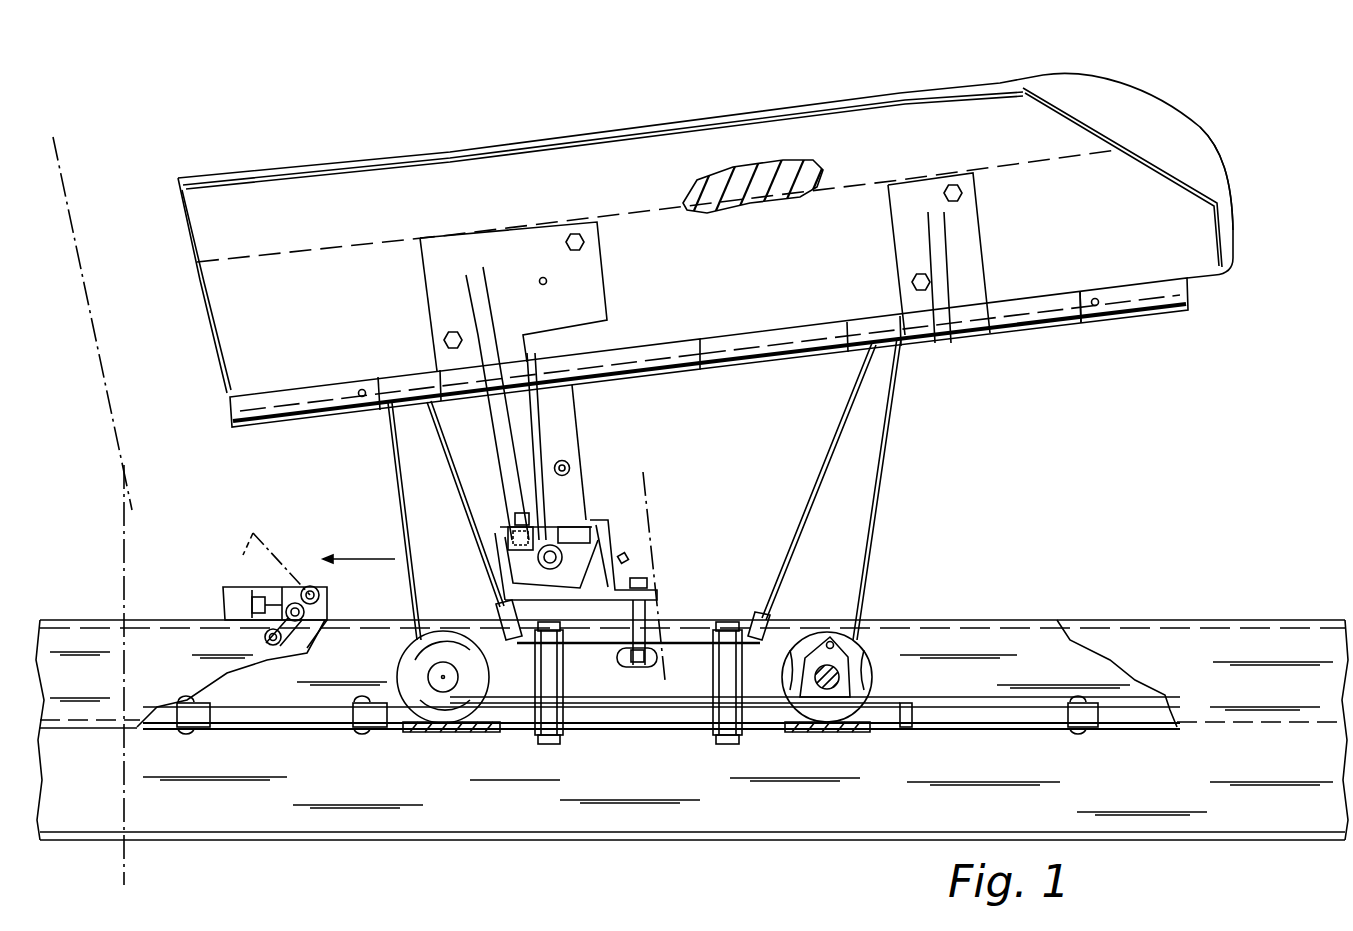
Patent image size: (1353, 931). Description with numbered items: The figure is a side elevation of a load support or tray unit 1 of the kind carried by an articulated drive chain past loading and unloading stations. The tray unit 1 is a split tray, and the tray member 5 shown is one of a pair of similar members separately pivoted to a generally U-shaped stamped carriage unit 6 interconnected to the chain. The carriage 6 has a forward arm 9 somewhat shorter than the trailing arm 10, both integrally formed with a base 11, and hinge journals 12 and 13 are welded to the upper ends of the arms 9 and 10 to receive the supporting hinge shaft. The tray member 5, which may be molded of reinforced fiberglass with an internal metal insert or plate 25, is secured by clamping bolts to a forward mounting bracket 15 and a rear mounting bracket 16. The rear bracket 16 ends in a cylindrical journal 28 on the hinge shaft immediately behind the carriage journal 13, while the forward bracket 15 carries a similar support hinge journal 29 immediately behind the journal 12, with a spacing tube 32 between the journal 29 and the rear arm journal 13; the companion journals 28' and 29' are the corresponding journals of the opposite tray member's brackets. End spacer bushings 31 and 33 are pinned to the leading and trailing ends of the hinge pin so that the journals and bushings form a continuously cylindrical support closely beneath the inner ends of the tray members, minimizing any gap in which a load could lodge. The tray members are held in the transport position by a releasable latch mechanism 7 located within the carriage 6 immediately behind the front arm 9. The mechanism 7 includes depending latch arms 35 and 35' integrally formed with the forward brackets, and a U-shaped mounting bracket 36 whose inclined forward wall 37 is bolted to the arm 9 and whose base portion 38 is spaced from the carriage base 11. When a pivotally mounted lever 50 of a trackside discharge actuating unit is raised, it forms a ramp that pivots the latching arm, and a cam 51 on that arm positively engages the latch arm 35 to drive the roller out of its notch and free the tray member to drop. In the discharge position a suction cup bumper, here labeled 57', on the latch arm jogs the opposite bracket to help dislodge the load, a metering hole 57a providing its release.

The tray unit 1 is at (925, 378).
The tray member 5 is at (200, 323).
The carriage unit 6 is at (830, 440).
The latch mechanism 7 is at (602, 516).
The forward arm 9 is at (410, 476).
The trailing arm 10 is at (863, 512).
The base 11 is at (617, 683).
The hinge journal 12 is at (412, 410).
The hinge journal 13 is at (858, 348).
The forward mounting bracket 15 is at (418, 272).
The rear mounting bracket 16 is at (988, 227).
The metal insert 25 is at (745, 203).
The cylindrical journal 28 is at (966, 293).
The clamp 28' is at (1076, 326).
The support hinge journal 29 is at (492, 403).
The guide rod 29' is at (627, 329).
The end spacer bushing 31 is at (268, 425).
The spacing tube 32 is at (690, 372).
The end spacer bushing 33 is at (1148, 312).
The latch arm 35 is at (503, 446).
The latch arm 35' is at (602, 452).
The mounting bracket 36 is at (634, 552).
The forward wall 37 is at (500, 553).
The base portion 38 is at (658, 592).
The lever 50 is at (253, 587).
The cam 51 is at (528, 520).
The metering hole 57a is at (546, 283).
The hole 57' is at (596, 454).